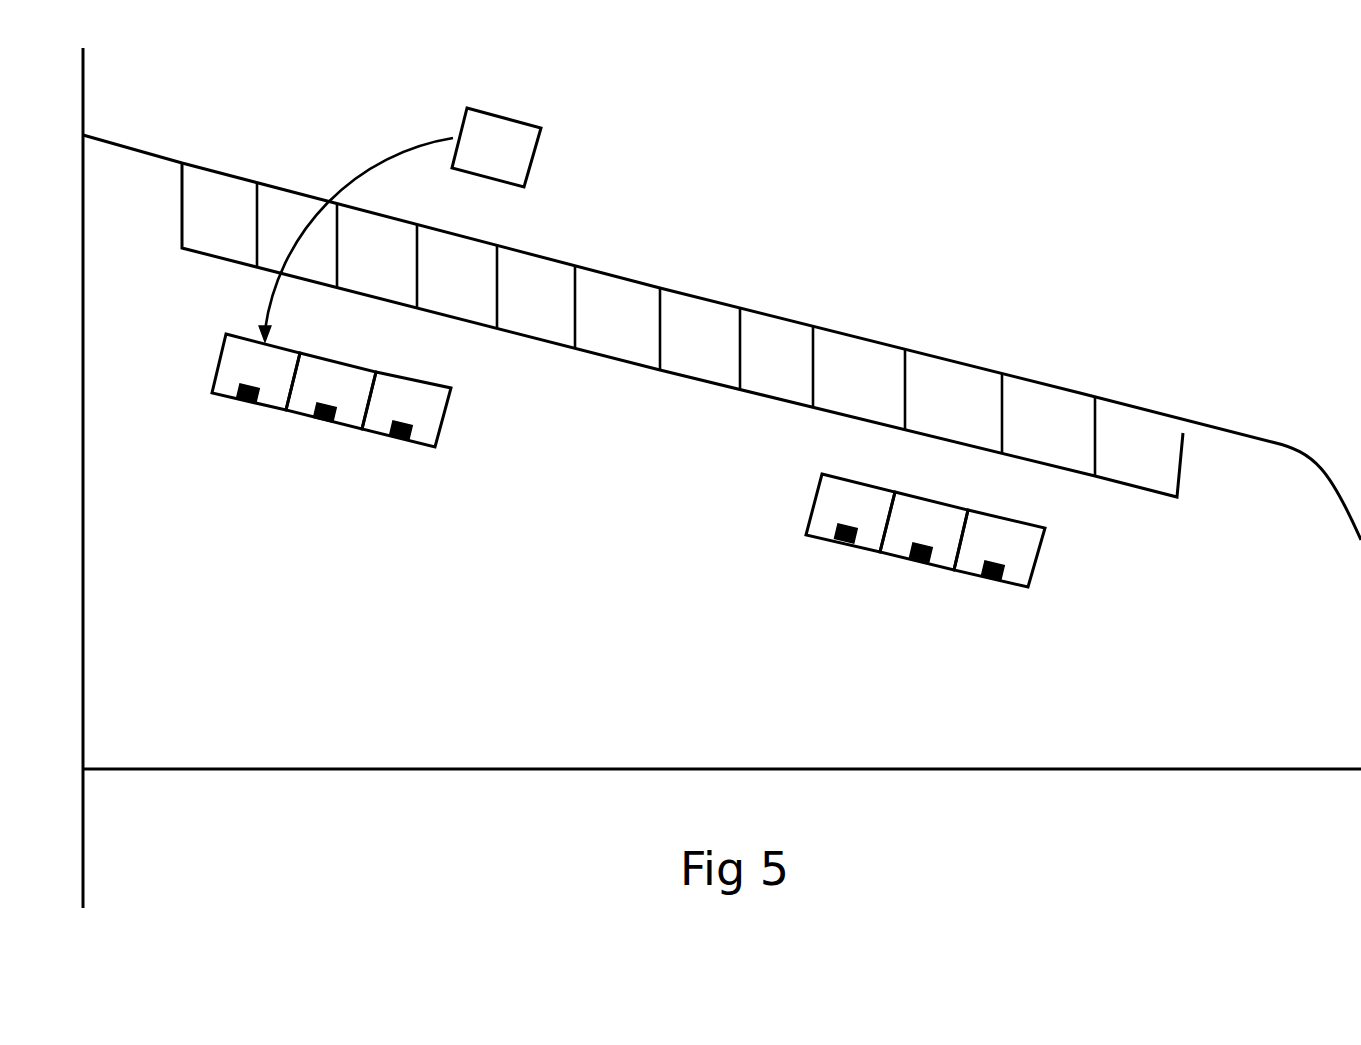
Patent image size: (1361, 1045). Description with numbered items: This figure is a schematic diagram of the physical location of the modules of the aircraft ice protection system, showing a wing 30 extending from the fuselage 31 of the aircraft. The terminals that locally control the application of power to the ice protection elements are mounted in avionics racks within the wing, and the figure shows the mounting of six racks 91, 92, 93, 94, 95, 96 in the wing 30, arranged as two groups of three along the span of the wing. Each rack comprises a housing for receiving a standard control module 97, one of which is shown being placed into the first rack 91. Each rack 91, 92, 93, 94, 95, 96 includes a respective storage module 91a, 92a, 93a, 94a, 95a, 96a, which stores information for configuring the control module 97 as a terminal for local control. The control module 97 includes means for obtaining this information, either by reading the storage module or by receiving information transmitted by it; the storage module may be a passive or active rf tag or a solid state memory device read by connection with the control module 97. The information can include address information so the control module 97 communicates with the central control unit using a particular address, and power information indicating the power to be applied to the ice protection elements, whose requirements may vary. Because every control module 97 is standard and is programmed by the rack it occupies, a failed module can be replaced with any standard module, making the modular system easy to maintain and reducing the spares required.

The wing 30 is at (1248, 425).
The fuselage 31 is at (92, 86).
The control module 97 is at (515, 110).
The rack 91 is at (296, 343).
The rack 92 is at (354, 357).
The rack 93 is at (434, 376).
The storage module 91a is at (252, 418).
The storage module 92a is at (331, 437).
The storage module 93a is at (405, 455).
The rack 94 is at (871, 477).
The rack 95 is at (945, 494).
The rack 96 is at (1023, 511).
The storage module 94a is at (853, 560).
The storage module 95a is at (922, 577).
The storage module 96a is at (997, 592).